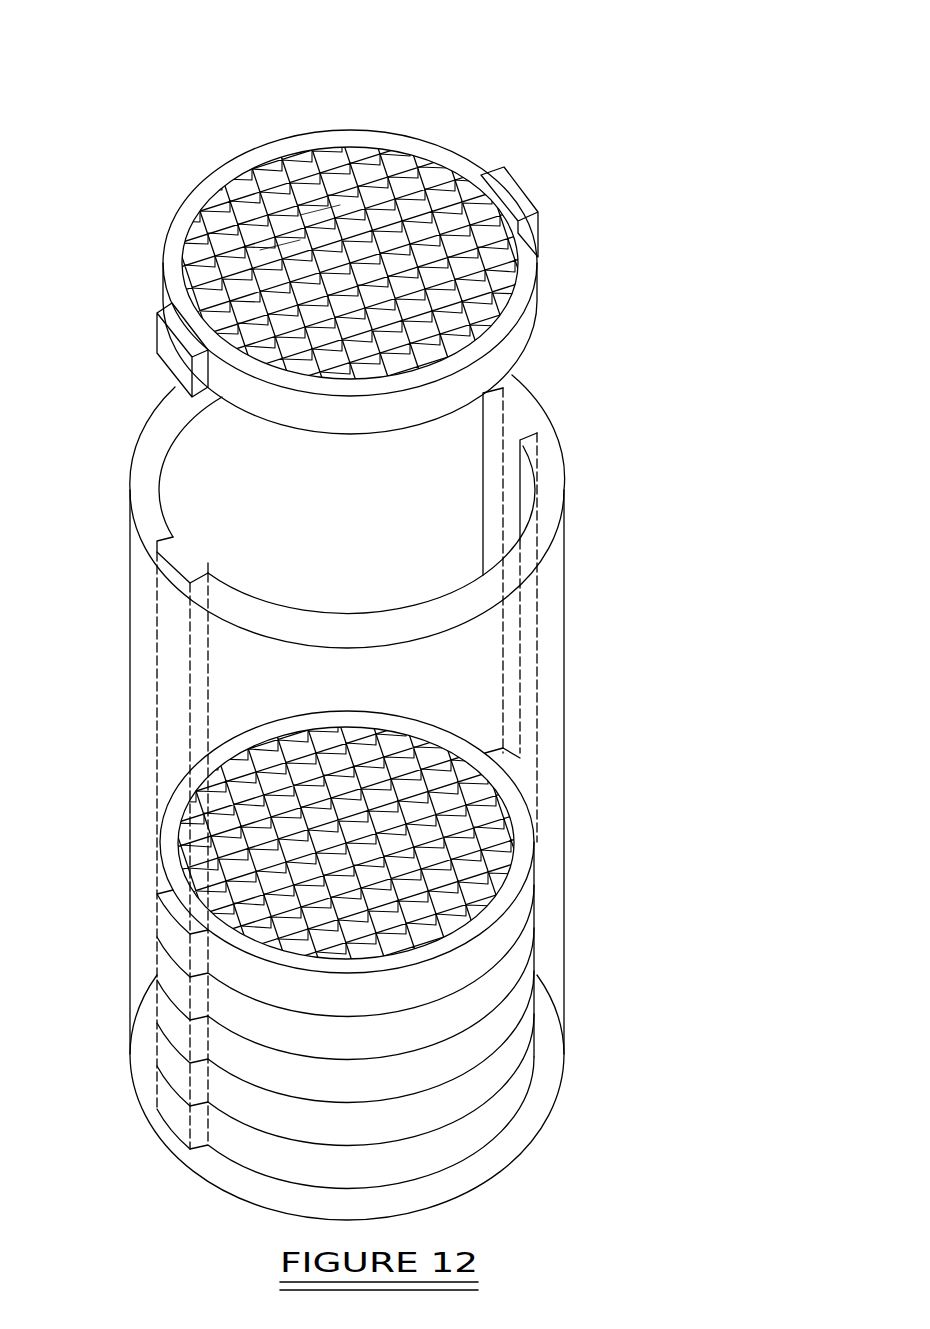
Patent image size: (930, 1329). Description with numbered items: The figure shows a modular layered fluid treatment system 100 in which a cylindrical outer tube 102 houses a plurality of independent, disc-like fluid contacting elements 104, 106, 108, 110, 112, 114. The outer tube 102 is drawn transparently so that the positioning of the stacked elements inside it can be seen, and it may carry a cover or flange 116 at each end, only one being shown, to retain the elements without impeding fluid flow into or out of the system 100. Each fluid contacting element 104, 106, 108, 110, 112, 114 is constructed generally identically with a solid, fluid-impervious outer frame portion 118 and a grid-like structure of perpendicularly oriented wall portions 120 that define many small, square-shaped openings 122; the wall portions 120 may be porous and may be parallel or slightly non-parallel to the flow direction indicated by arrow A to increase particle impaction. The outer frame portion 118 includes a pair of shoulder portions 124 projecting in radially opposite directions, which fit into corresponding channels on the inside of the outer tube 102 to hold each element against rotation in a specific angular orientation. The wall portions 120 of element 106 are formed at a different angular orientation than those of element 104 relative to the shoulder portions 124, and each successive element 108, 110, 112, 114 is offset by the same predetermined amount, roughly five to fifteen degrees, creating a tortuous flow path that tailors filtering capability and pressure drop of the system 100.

The modular layered fluid treatment system 100 is at (608, 118).
The outer tube 102 is at (568, 808).
The fluid contacting element 104 is at (180, 200).
The fluid contacting element 106 is at (483, 952).
The fluid contacting element 108 is at (485, 997).
The fluid contacting element 110 is at (495, 1067).
The fluid contacting element 112 is at (487, 1033).
The fluid contacting element 114 is at (502, 1102).
The cover or flange 116 is at (220, 1168).
The outer frame portion 118 is at (443, 160).
The wall portions 120 is at (388, 172).
The openings 122 is at (235, 207).
The shoulder portions 124 is at (511, 187).